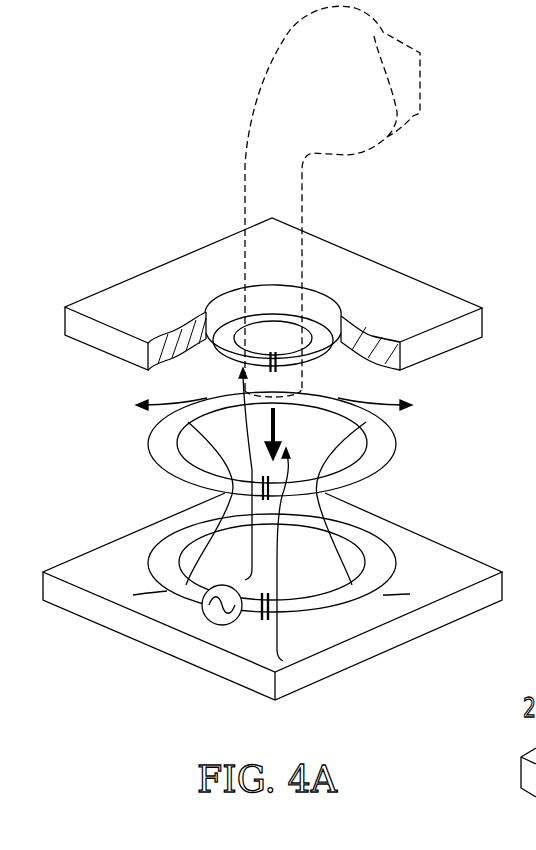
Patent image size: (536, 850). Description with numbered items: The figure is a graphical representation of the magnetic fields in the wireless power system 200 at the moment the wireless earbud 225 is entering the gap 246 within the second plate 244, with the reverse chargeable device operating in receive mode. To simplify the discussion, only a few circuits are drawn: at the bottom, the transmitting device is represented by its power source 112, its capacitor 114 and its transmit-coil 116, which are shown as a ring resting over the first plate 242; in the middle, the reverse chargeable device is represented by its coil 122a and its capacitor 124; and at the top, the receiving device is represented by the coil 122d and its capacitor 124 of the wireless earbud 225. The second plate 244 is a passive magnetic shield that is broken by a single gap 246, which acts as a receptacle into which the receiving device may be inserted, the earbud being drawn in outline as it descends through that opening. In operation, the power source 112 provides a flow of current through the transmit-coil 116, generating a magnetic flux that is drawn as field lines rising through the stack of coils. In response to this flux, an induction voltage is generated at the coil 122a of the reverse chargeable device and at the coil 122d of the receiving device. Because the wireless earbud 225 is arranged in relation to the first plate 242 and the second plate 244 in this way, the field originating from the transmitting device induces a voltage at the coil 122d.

The wireless power system 200 is at (116, 56).
The wireless earbud 225 is at (252, 59).
The second plate 244 is at (100, 300).
The gap 246 is at (322, 261).
The coil 122d is at (225, 338).
The capacitor 124 is at (282, 366).
The coil 122a is at (148, 443).
The first plate 242 is at (92, 563).
The transmit-coil 116 is at (397, 562).
The power source 112 is at (222, 627).
The capacitor 114 is at (300, 613).